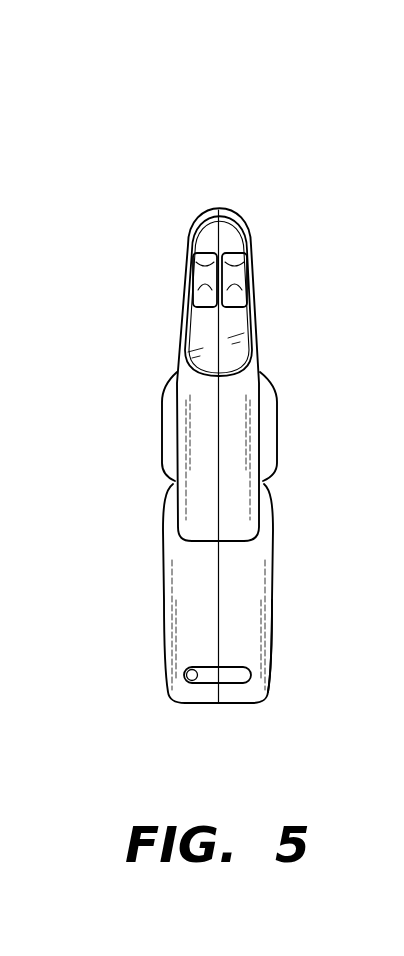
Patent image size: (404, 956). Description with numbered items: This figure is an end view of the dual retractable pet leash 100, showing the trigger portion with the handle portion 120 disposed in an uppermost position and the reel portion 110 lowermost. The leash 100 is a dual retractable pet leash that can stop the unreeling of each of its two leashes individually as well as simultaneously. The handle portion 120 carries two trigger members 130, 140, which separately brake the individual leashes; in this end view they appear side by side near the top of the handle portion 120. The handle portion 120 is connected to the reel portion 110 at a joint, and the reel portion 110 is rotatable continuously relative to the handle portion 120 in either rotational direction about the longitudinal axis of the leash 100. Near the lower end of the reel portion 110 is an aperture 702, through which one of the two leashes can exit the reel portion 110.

The dual retractable pet leash 100 is at (150, 108).
The reel portion 110 is at (247, 605).
The handle portion 120 is at (238, 402).
The trigger member 130 is at (197, 266).
The trigger member 140 is at (248, 267).
The aperture 702 is at (279, 677).